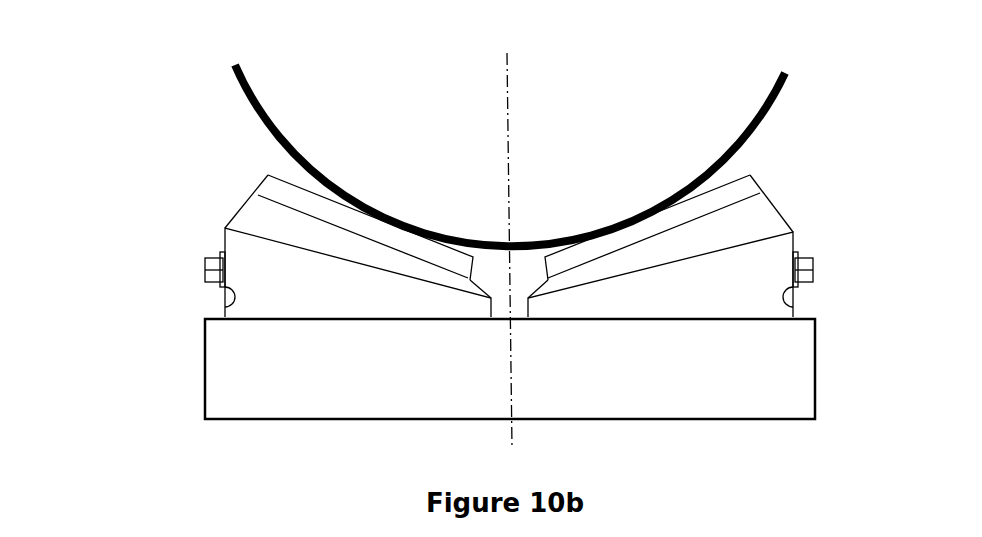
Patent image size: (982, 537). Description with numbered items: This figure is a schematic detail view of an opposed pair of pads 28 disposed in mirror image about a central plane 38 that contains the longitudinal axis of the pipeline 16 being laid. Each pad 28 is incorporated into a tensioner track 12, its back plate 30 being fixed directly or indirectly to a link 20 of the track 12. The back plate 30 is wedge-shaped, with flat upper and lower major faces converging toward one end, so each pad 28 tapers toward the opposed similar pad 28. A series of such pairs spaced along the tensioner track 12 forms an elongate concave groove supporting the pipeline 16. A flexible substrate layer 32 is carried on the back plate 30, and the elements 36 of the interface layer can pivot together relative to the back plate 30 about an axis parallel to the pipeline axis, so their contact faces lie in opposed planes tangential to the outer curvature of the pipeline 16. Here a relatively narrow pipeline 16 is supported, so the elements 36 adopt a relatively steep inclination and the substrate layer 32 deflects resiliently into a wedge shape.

The tensioner track 12 is at (452, 266).
The pipeline 16 is at (748, 122).
The links 20 is at (215, 378).
The pad 28 is at (505, 242).
The back plate 30 is at (348, 305).
The substrate layer 32 is at (308, 236).
The elements of the interface layer 36 is at (410, 242).
The central plane 38 is at (505, 138).